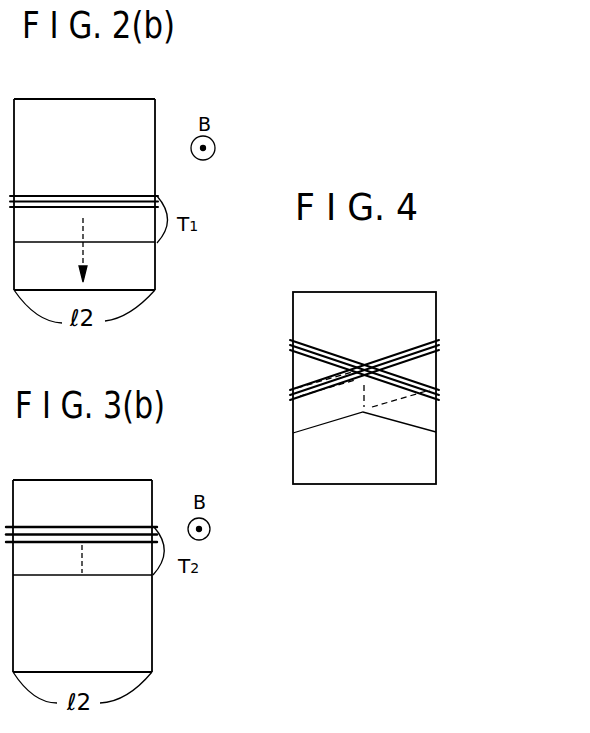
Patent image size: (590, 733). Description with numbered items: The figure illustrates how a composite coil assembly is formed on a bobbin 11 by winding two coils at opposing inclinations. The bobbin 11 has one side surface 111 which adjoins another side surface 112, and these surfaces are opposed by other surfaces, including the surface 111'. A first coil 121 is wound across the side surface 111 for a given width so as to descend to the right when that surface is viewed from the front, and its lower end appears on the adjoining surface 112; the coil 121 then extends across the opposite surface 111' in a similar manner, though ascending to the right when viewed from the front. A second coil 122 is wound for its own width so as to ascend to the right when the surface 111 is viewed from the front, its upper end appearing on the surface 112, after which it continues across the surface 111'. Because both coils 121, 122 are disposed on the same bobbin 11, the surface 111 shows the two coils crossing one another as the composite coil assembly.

In FIG. 2B, the bobbin 11 is at (121, 93).
In FIG. 4, the bobbin 11 is at (372, 298).
In FIG. 2B, the side surface 111 is at (17, 178).
In FIG. 3B, the side surface 111 is at (21, 560).
In FIG. 2B, the side surface 112 is at (66, 106).
In FIG. 3B, the side surface 112 is at (107, 488).
In FIG. 2B, the opposite surface 111' is at (175, 203).
In FIG. 3B, the opposite surface 111' is at (176, 584).
In FIG. 4, the first coil 121 is at (292, 371).
In FIG. 4, the second coil 122 is at (433, 371).